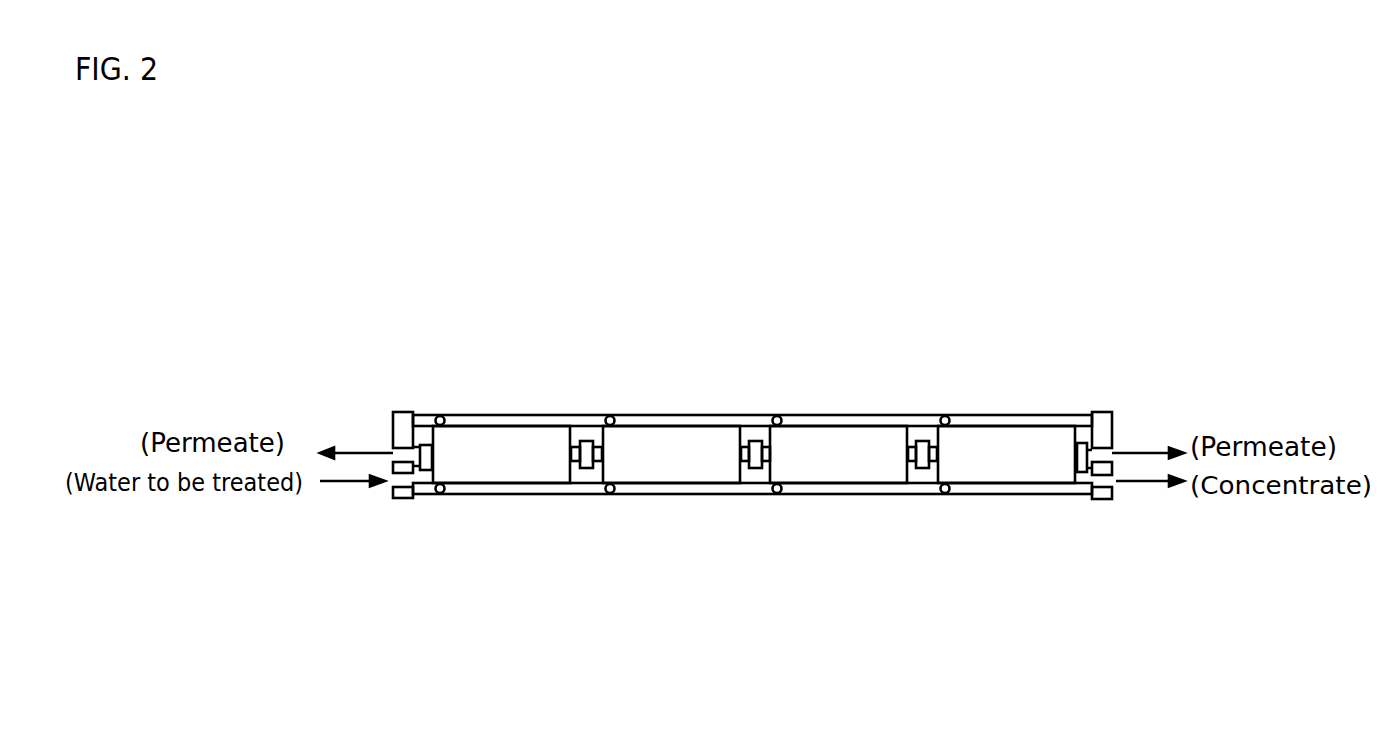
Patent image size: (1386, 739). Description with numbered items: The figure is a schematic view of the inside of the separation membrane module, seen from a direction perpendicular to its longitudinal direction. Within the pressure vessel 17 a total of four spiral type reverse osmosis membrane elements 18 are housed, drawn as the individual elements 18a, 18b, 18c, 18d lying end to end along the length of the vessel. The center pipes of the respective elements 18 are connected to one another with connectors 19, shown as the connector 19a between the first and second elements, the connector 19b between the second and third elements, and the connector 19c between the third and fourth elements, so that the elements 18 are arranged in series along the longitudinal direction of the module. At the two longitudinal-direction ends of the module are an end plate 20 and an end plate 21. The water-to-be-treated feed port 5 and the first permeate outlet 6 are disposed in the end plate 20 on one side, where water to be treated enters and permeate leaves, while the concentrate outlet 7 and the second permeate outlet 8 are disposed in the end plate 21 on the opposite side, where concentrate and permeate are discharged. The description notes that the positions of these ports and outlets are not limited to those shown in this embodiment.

The water-to-be-treated feed port 5 is at (376, 483).
The first permeate outlet 6 is at (388, 447).
The concentrate outlet 7 is at (1117, 485).
The second permeate outlet 8 is at (1117, 447).
The pressure vessel 17 is at (982, 412).
The spiral type reverse osmosis membrane elements 18 is at (1088, 607).
The spiral type reverse osmosis membrane element 18a is at (520, 460).
The spiral type reverse osmosis membrane element 18b is at (667, 460).
The spiral type reverse osmosis membrane element 18c is at (830, 460).
The spiral type reverse osmosis membrane element 18d is at (998, 460).
The connectors 19 is at (862, 292).
The connector 19a is at (583, 441).
The connector 19b is at (752, 441).
The connector 19c is at (920, 441).
The end plate 20 is at (397, 413).
The end plate 21 is at (1098, 412).